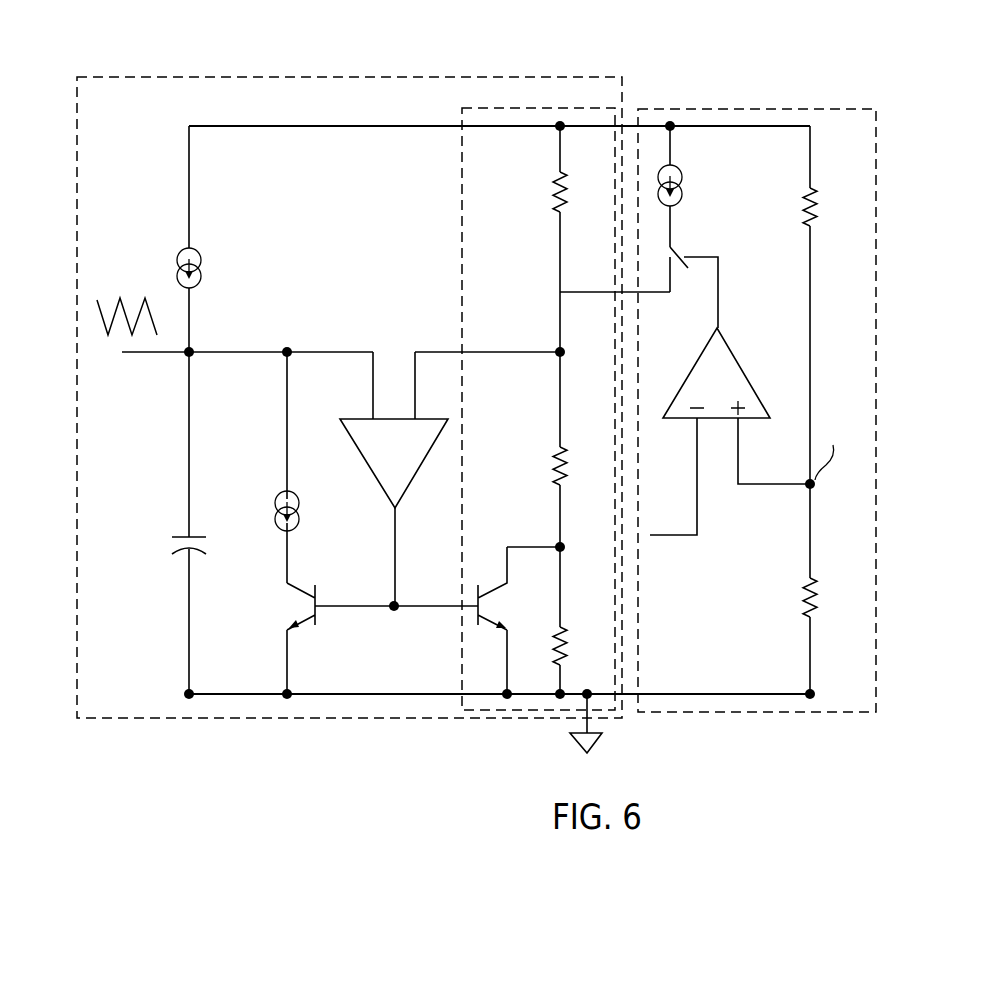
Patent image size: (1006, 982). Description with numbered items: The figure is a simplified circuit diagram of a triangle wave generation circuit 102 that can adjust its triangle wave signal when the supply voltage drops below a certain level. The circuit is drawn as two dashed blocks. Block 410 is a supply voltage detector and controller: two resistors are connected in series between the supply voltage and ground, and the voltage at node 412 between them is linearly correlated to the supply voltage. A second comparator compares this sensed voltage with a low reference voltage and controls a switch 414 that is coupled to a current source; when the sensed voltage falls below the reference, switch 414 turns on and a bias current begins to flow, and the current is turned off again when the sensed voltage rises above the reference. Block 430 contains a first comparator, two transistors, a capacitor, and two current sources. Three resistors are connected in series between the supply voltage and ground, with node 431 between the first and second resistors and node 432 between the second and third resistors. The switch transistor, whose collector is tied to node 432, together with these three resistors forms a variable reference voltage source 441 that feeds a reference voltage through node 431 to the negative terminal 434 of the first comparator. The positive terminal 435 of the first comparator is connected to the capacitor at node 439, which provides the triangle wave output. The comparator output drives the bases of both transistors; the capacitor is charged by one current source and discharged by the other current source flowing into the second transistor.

The triangle wave generation circuit 102 is at (898, 122).
The block 430 is at (368, 72).
The variable reference voltage source 441 is at (517, 167).
The block 410 is at (780, 109).
The node 439 is at (197, 349).
The node 431 is at (556, 350).
The positive terminal 435 is at (340, 385).
The negative terminal 434 is at (435, 385).
The node 432 is at (557, 547).
The switch 414 is at (694, 279).
The node 412 is at (805, 459).